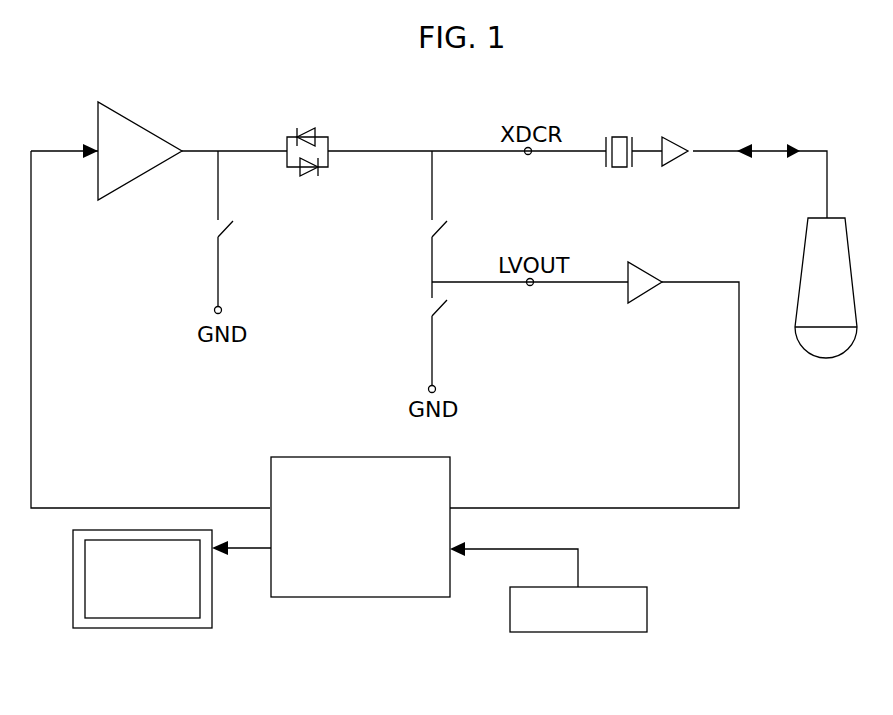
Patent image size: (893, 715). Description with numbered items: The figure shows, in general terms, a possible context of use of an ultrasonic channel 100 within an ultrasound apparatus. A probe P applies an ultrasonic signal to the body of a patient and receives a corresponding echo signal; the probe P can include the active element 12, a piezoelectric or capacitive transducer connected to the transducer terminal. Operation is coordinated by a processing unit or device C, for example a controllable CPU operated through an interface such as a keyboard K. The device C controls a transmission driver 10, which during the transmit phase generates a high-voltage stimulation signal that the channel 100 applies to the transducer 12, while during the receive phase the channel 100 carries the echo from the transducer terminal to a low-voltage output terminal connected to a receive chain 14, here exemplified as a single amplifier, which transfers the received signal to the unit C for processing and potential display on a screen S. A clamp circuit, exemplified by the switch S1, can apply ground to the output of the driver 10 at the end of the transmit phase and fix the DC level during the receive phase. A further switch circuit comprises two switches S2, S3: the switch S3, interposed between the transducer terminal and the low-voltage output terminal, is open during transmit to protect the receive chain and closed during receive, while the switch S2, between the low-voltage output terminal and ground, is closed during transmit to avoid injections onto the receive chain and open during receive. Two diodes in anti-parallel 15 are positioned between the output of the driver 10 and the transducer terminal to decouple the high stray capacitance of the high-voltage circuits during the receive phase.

The ultrasonic channel 100 is at (634, 44).
The transmission driver 10 is at (140, 132).
The active element 12 is at (647, 125).
The receive chain 14 is at (654, 312).
The two diodes in anti-parallel 15 is at (307, 114).
The switch S1 is at (239, 232).
The second switch S2 is at (451, 337).
The switch S3 is at (453, 216).
The probe P is at (826, 318).
The processing unit or device C is at (360, 556).
The screen S is at (172, 602).
The keyboard K is at (579, 587).